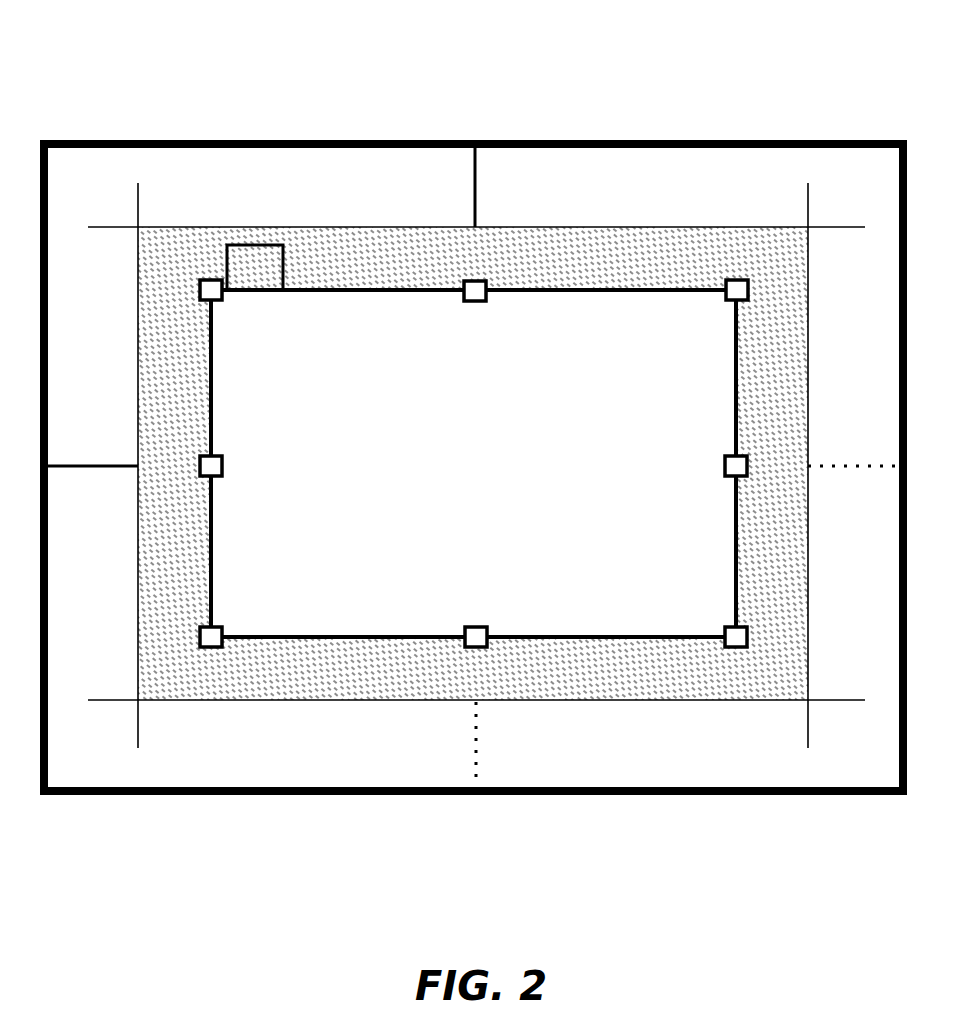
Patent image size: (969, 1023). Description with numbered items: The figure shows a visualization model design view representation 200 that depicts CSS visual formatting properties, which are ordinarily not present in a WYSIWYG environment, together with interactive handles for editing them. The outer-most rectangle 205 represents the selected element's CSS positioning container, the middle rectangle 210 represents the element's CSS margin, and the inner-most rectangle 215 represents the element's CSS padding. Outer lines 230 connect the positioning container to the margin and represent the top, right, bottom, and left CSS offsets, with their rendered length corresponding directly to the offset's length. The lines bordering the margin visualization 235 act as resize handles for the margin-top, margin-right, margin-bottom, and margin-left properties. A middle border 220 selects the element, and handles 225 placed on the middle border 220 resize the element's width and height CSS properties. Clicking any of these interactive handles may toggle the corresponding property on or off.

The visualization model design view representation 200 is at (838, 45).
The outer-most rectangle 205 is at (640, 138).
The middle rectangle 210 is at (330, 245).
The inner-most rectangle 215 is at (305, 600).
The middle border 220 is at (415, 638).
The handles 225 is at (210, 290).
The outer lines 230 is at (478, 178).
The lines bordering the margin visualization 235 is at (642, 228).